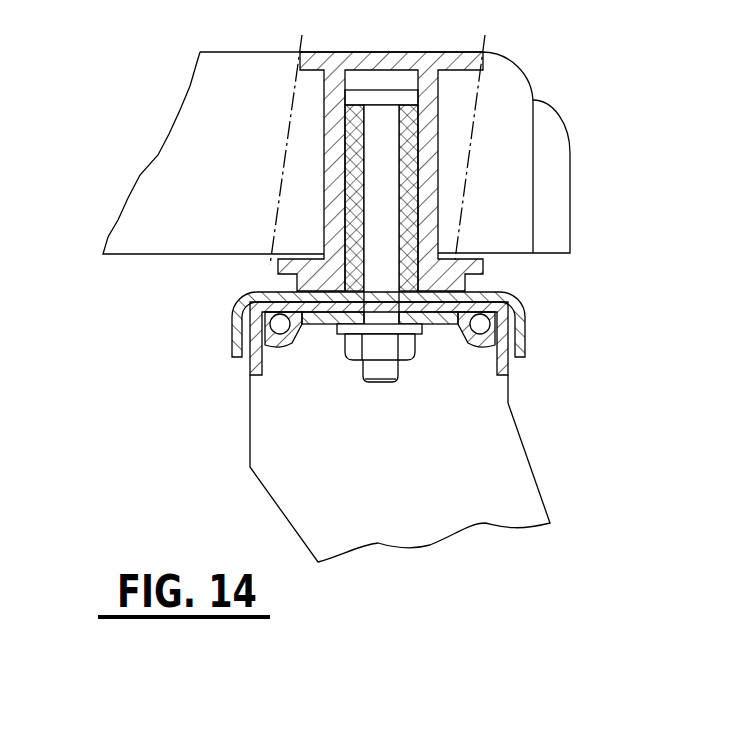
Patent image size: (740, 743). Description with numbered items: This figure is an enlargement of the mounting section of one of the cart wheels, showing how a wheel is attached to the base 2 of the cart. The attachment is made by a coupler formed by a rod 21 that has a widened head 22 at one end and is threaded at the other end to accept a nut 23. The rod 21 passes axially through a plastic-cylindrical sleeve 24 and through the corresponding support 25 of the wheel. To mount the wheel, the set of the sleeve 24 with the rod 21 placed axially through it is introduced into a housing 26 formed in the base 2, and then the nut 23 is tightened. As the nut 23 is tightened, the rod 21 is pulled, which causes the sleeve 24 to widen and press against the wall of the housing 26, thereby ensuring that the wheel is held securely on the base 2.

The base 2 is at (162, 230).
The rod 21 is at (387, 271).
The widened head 22 is at (408, 97).
The nut 23 is at (358, 352).
The plastic-cylindrical sleeve 24 is at (408, 148).
The support 25 is at (482, 449).
The housing 26 is at (427, 192).